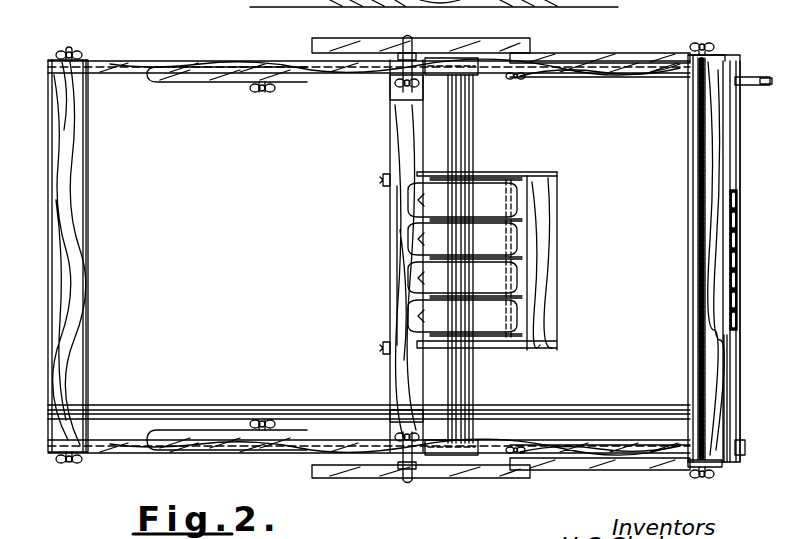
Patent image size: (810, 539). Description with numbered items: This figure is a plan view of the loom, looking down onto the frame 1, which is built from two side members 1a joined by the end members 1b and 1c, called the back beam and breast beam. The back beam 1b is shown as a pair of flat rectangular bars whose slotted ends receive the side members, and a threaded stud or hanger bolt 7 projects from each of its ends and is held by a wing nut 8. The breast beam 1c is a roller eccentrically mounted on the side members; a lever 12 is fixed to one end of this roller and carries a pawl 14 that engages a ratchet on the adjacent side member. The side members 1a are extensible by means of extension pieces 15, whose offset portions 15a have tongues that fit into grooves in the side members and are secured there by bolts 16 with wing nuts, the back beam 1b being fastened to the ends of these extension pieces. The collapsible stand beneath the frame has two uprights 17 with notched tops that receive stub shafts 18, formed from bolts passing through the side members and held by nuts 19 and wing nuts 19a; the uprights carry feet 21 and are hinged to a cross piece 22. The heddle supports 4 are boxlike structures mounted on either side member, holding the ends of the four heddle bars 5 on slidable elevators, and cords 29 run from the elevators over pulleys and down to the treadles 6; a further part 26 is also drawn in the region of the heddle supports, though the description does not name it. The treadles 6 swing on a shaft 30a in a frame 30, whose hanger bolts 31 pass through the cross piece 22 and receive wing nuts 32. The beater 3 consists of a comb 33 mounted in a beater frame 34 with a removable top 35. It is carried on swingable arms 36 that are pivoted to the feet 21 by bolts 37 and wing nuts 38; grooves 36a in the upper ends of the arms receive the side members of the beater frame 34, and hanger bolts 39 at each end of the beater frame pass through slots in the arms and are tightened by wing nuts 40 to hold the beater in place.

The frame 1 is at (587, 75).
The side members 1a is at (296, 68).
The end member (back beam) 1b is at (84, 204).
The end member (breast beam) 1c is at (735, 172).
The beater 3 is at (736, 352).
The heddle supports 4 is at (437, 76).
The heddle bars 5 is at (470, 140).
The treadles 6 is at (465, 257).
The threaded stud (hanger bolt) 7 is at (69, 49).
The nuts 8 is at (79, 55).
The lever 12 is at (745, 88).
The pawl 14 is at (746, 78).
The extension pieces 15 is at (150, 62).
The offset portions 15a is at (205, 84).
The bolts 16 is at (262, 62).
The upright members 17 is at (395, 40).
The stub shafts 18 is at (414, 40).
The nuts 19 is at (426, 450).
The wing nuts 19a is at (396, 86).
The feet 21 is at (479, 479).
The cross piece 22 is at (396, 292).
The cross bar 26 is at (494, 172).
The cords 29 is at (435, 255).
The frame (treadle frame) 30 is at (558, 212).
The shaft 30a is at (516, 178).
The hanger bolts 31 is at (382, 180).
The wing nuts 32 is at (389, 256).
The comb 33 is at (706, 402).
The beater frame 34 is at (545, 52).
The removable top 35 is at (738, 282).
The swingable arms 36 is at (626, 61).
The grooves 36a is at (703, 46).
The bolts 37 is at (522, 472).
The wing nuts 38 is at (518, 80).
The hanger bolts 39 is at (705, 486).
The wing nuts 40 is at (716, 476).